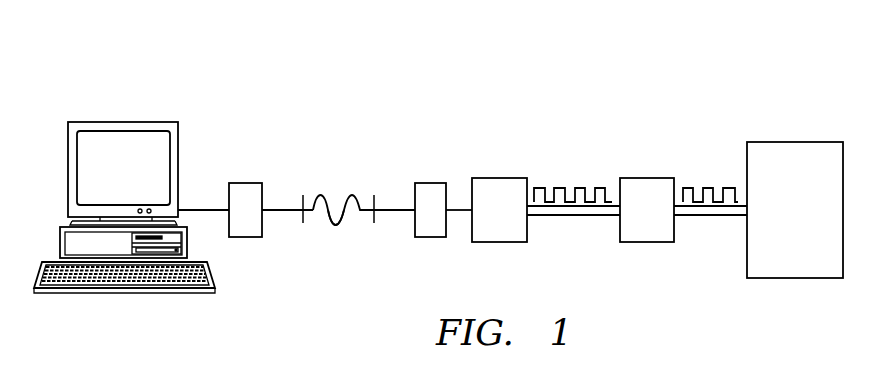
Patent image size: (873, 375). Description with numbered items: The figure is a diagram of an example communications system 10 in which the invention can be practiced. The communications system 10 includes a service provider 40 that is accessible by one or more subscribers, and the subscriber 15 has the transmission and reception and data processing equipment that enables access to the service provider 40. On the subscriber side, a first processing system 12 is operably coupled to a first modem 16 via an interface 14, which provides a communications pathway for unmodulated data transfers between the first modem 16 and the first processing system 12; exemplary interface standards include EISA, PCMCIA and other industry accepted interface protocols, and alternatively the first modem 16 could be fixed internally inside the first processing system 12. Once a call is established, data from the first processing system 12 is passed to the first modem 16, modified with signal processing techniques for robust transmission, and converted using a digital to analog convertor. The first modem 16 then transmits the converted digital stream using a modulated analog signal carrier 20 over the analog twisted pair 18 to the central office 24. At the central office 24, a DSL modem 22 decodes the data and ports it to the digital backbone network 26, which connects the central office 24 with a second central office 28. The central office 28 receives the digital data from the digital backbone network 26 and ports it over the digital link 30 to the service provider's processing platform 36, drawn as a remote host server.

The communications system 10 is at (388, 73).
The first processing system 12 is at (123, 294).
The interface 14 is at (207, 209).
The subscriber 15 is at (113, 92).
The first modem 16 is at (245, 182).
The analog twisted pair 18 is at (289, 208).
The modulated analog signal carrier 20 is at (334, 216).
The DSL modem 22 is at (432, 237).
The central office 24 is at (500, 178).
The digital backbone network 26 is at (573, 216).
The central office 28 is at (649, 178).
The digital link 30 is at (710, 216).
The processing platform 36 is at (795, 278).
The service provider 40 is at (797, 110).